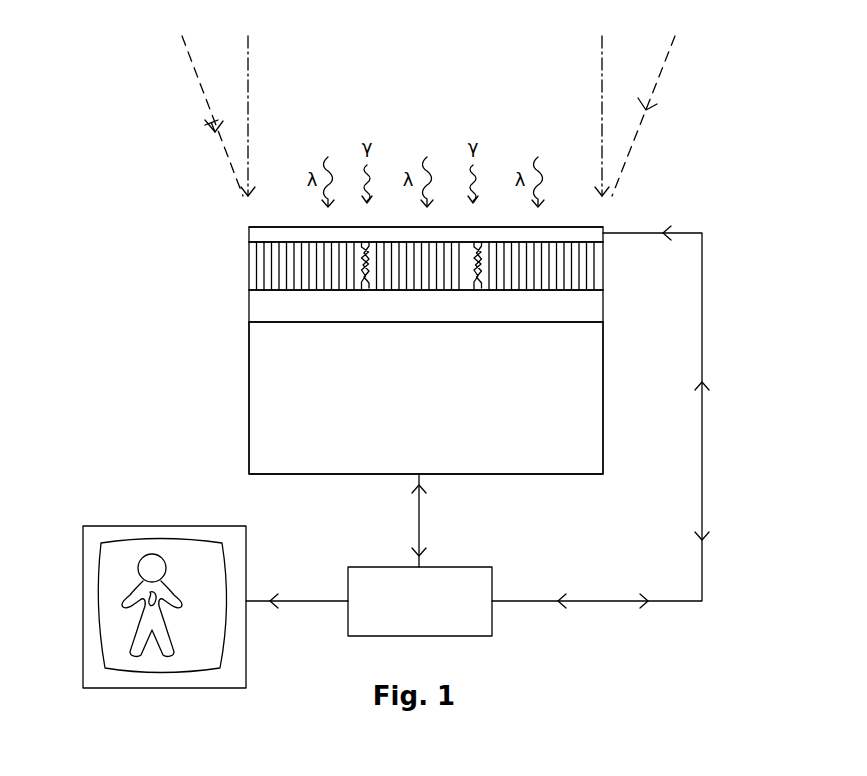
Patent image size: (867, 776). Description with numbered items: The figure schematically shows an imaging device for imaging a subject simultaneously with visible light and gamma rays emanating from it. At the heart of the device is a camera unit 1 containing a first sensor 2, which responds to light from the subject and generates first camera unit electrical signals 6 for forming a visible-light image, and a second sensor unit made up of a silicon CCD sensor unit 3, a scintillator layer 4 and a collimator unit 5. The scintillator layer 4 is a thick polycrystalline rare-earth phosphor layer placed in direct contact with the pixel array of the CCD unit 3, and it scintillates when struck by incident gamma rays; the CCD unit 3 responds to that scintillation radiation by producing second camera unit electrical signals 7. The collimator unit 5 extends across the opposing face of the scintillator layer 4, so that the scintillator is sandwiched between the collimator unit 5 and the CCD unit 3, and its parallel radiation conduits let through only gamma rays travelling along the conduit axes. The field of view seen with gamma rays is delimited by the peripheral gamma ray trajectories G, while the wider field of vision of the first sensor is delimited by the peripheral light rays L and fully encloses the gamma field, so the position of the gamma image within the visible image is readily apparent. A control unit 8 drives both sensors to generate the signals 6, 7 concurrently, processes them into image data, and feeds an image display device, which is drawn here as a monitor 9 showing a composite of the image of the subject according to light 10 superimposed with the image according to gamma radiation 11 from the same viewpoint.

The camera unit 1 is at (198, 358).
The first sensor 2 is at (249, 232).
The CCD sensor unit 3 is at (603, 367).
The scintillator layer 4 is at (603, 305).
The collimator unit 5 is at (603, 268).
The first camera unit electrical signals 6 is at (702, 292).
The second camera unit electrical signals 7 is at (420, 521).
The control unit 8 is at (411, 616).
The display monitor 9 is at (128, 526).
The image of the subject according to light 10 is at (167, 562).
The image of the subject according to gamma radiation 11 is at (148, 615).
The peripheral light ray L is at (696, 0).
The peripheral gamma ray propagation trajectory G is at (618, 0).